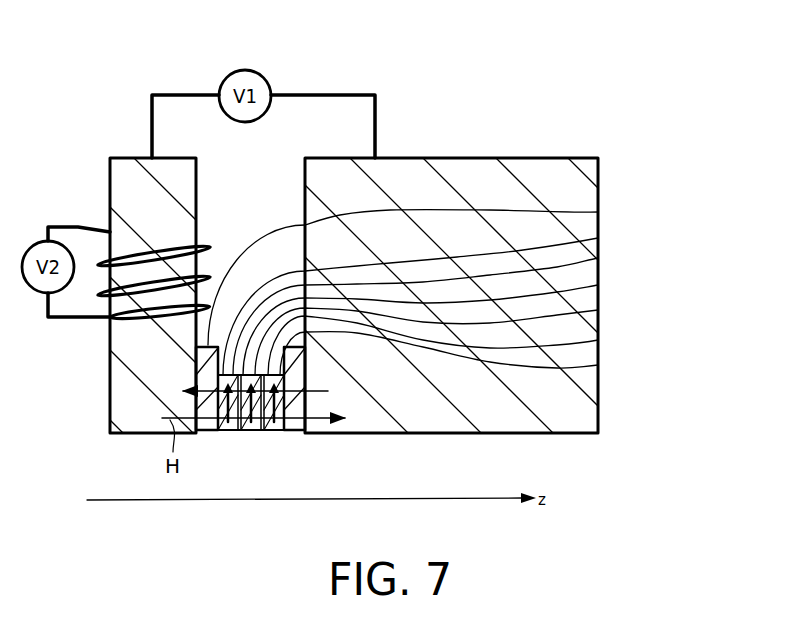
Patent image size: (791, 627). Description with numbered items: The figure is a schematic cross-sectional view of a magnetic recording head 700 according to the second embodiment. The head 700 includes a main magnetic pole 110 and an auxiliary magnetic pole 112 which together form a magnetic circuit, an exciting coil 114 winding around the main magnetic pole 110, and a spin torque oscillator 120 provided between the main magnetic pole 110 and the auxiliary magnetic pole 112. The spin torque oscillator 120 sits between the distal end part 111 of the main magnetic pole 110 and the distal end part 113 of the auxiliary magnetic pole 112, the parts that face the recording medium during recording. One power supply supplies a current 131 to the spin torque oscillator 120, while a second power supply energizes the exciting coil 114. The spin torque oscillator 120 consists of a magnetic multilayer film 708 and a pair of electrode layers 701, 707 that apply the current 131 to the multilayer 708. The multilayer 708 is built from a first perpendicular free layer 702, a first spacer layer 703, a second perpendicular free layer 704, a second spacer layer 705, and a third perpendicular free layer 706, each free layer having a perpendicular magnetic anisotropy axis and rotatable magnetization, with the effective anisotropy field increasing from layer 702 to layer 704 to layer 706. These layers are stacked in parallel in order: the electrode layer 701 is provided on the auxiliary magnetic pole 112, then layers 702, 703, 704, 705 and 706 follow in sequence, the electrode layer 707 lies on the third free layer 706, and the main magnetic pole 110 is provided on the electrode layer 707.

The magnetic recording head 700 is at (472, 77).
The main magnetic pole 110 is at (110, 176).
The distal end part 111 is at (117, 410).
The exciting coil 114 is at (143, 256).
The current 131 is at (213, 383).
The auxiliary magnetic pole 112 is at (600, 178).
The distal end part 113 is at (600, 418).
The spin torque oscillator 120 is at (485, 281).
The magnetic multilayer film 708 is at (464, 296).
The electrode layer 701 is at (493, 353).
The first perpendicular free layer 702 is at (459, 345).
The first spacer layer 703 is at (598, 310).
The second perpendicular free layer 704 is at (598, 285).
The second spacer layer 705 is at (598, 258).
The third perpendicular free layer 706 is at (598, 238).
The electrode layer 707 is at (598, 212).